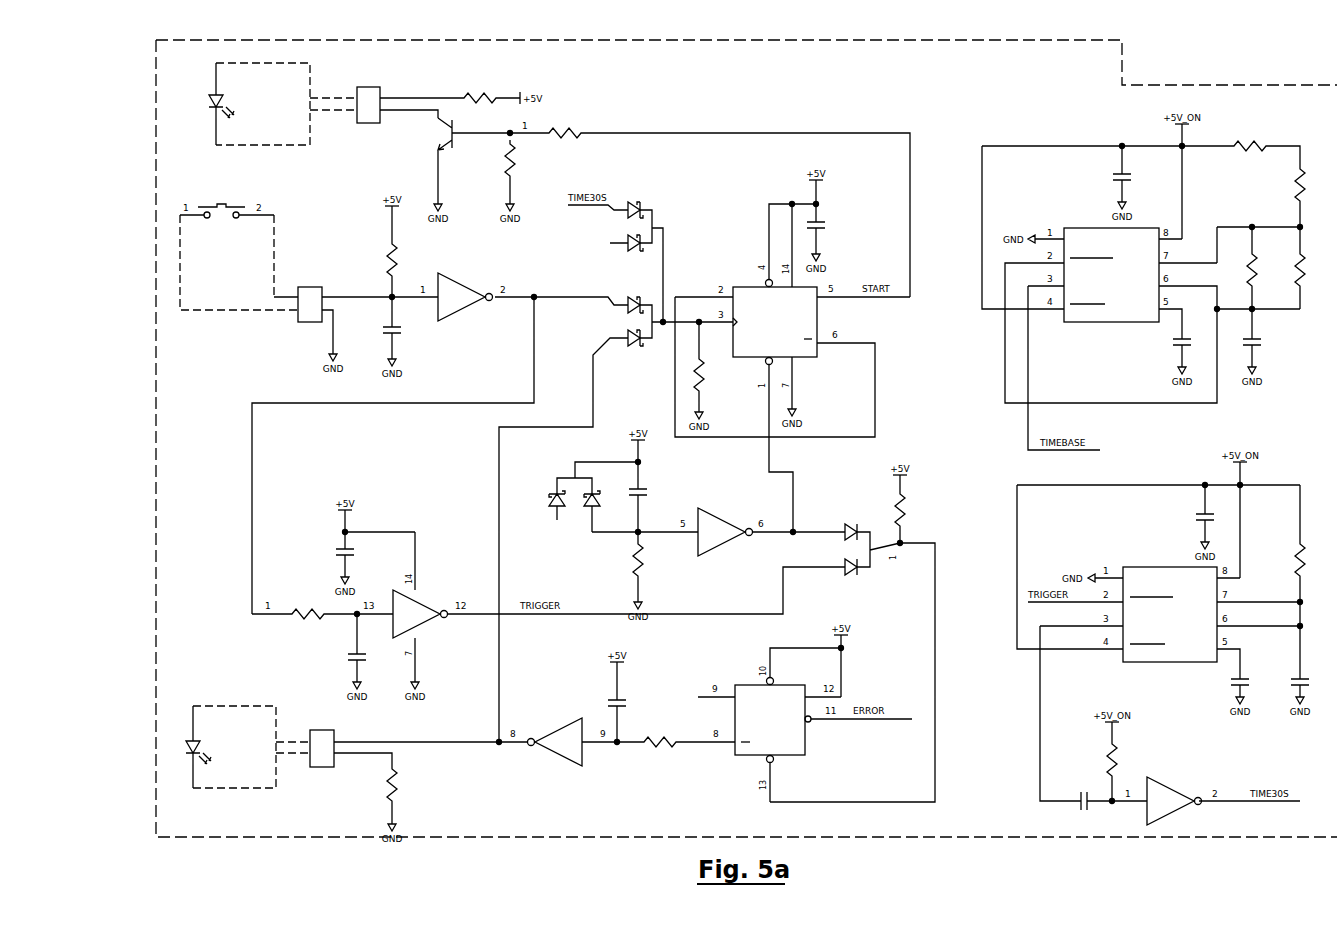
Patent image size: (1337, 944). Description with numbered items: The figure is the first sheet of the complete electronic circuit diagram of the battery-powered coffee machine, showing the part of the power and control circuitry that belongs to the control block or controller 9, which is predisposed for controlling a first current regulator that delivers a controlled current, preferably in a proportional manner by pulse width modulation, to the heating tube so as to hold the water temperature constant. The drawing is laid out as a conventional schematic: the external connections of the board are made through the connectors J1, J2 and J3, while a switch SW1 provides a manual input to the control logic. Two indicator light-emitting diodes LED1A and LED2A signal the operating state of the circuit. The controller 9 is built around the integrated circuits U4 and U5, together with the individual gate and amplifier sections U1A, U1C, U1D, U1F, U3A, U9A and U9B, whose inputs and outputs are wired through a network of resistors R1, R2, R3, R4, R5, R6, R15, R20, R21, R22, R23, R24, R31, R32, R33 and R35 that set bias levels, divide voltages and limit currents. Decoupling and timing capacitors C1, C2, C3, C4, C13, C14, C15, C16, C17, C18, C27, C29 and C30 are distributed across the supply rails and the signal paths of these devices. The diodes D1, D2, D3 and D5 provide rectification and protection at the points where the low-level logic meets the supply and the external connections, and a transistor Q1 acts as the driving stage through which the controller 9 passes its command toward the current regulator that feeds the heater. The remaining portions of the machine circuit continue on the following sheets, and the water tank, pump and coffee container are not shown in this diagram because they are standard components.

The controller 9 is at (1240, 85).
The red LED indicator LED1A is at (250, 99).
The red LED indicator LED2A is at (222, 755).
The connector J1 is at (368, 99).
The connector J2 is at (310, 298).
The connector J3 is at (321, 731).
The push-button switch SW1 is at (221, 198).
The transistor Q1 is at (436, 159).
The resistor R1 is at (480, 93).
The resistor R2 is at (398, 785).
The resistor R3 is at (516, 160).
The resistor R4 is at (398, 260).
The resistor R5 is at (705, 375).
The resistor R6 is at (906, 510).
The resistor R15 is at (565, 128).
The resistor R20 is at (1250, 141).
The resistor R21 is at (1310, 185).
The resistor R22 is at (1262, 270).
The resistor R23 is at (1310, 270).
The resistor R24 is at (306, 631).
The resistor R31 is at (649, 560).
The resistor R32 is at (1310, 560).
The resistor R33 is at (660, 737).
The resistor R35 is at (1093, 760).
The capacitor C1 is at (1128, 177).
The capacitor C2 is at (823, 225).
The capacitor C3 is at (352, 551).
The capacitor C4 is at (1193, 519).
The capacitor C13 is at (402, 330).
The capacitor C14 is at (1169, 345).
The capacitor C15 is at (1261, 340).
The capacitor C16 is at (367, 657).
The capacitor C17 is at (1250, 681).
The capacitor C18 is at (1085, 795).
The capacitor C27 is at (628, 702).
The capacitor C29 is at (649, 492).
The capacitor C30 is at (1314, 681).
The dual schottky diode D1 is at (637, 308).
The dual schottky diode D2 is at (643, 214).
The dual schottky diode D3 is at (567, 495).
The dual diode D5 is at (850, 545).
The inverter gate U1A is at (465, 291).
The inverter gate U1C is at (725, 525).
The inverter gate U1D is at (555, 731).
The inverter gate U1F is at (420, 607).
The inverter gate U3A is at (1174, 794).
The 555 timer (timebase) U4 is at (1111, 268).
The 555 timer (30 s timer) U5 is at (1170, 608).
The D flip-flop U9A is at (768, 316).
The D flip-flop U9B is at (766, 713).